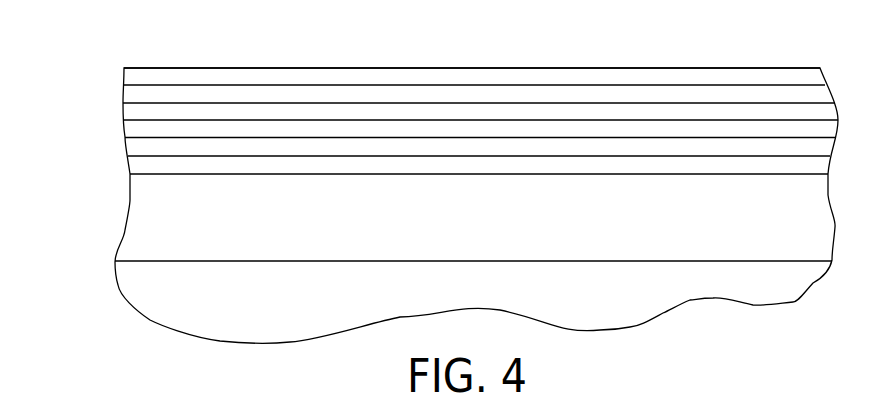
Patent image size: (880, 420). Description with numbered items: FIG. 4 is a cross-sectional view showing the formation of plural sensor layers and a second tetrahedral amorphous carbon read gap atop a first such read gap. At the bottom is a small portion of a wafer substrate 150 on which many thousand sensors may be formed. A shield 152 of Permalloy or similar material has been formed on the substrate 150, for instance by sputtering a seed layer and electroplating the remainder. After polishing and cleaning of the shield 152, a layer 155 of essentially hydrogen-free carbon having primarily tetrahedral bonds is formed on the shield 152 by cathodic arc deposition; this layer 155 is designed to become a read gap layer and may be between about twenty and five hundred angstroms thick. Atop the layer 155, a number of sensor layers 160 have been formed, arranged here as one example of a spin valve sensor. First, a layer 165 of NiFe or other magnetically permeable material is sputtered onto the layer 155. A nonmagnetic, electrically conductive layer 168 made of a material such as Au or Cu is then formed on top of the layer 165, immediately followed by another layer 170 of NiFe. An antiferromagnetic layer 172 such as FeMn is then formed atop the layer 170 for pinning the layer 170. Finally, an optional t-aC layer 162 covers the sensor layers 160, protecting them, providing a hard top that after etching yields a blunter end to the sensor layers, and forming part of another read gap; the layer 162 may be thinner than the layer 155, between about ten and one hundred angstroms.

The wafer substrate 150 is at (268, 312).
The shield 152 is at (667, 235).
The t-aC layer 155 is at (415, 167).
The sensor layers 160 is at (112, 85).
The t-aC layer 162 is at (220, 73).
The NiFe layer 165 is at (695, 147).
The nonmagnetic, electrically conductive layer 168 is at (519, 126).
The NiFe layer 170 is at (379, 107).
The antiferromagnetic layer 172 is at (695, 90).